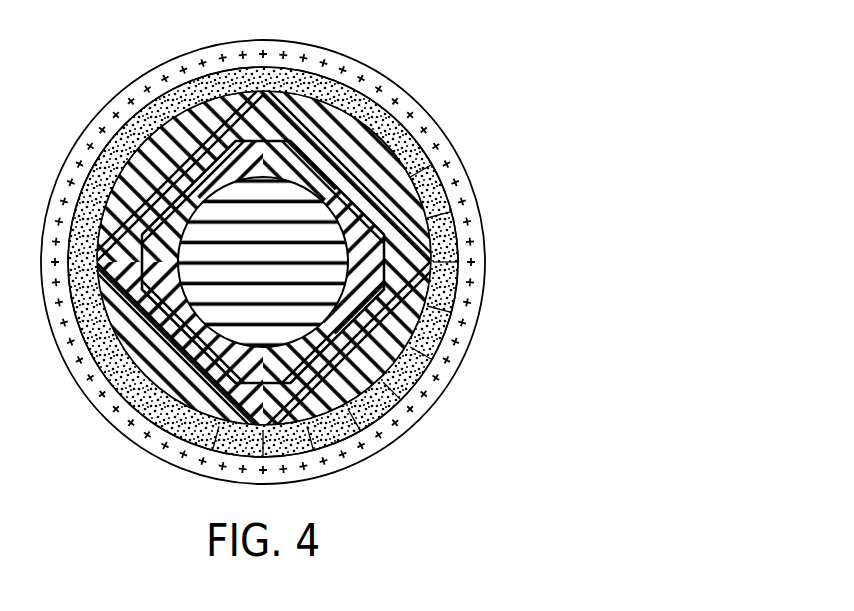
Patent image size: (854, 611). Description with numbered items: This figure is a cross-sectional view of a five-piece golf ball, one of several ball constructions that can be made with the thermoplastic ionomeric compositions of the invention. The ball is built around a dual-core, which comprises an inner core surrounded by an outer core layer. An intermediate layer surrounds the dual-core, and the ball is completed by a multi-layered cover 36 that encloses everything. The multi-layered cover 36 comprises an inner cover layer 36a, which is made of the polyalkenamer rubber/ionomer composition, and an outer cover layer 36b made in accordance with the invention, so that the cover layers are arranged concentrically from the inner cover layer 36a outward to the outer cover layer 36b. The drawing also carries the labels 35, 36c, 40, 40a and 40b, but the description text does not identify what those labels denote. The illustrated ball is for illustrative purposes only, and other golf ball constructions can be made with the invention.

The cable 35 is at (314, 242).
The multi-layered cover 36 is at (336, 262).
The inner cover layer 36a is at (343, 222).
The outer cover layer 36b is at (386, 245).
The outer insulation layer 36c is at (425, 272).
The outer covering assembly 40 is at (307, 262).
The shield layer 40a is at (432, 330).
The jacket 40b is at (440, 372).